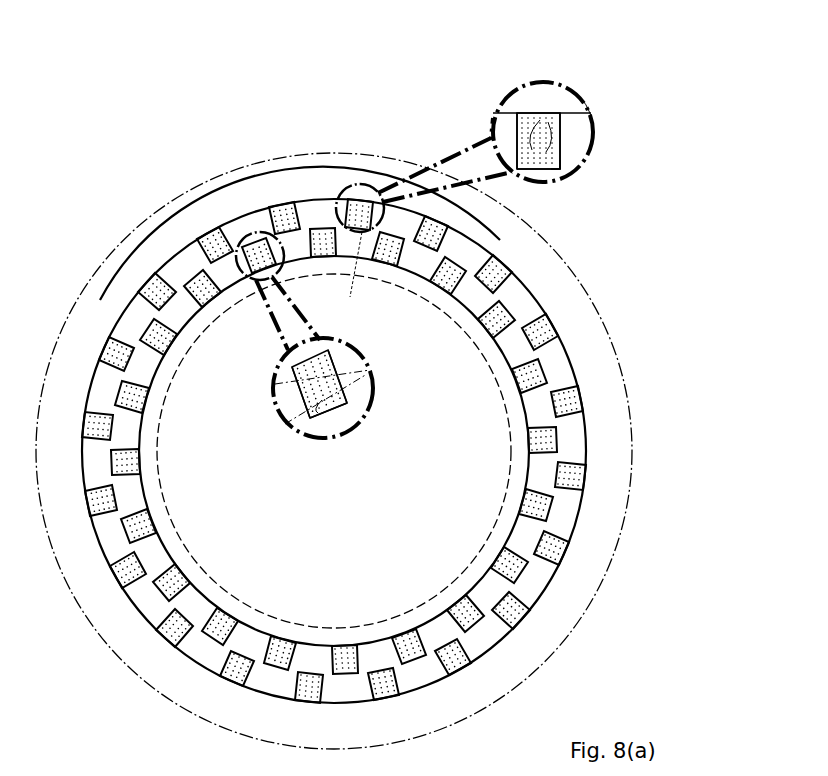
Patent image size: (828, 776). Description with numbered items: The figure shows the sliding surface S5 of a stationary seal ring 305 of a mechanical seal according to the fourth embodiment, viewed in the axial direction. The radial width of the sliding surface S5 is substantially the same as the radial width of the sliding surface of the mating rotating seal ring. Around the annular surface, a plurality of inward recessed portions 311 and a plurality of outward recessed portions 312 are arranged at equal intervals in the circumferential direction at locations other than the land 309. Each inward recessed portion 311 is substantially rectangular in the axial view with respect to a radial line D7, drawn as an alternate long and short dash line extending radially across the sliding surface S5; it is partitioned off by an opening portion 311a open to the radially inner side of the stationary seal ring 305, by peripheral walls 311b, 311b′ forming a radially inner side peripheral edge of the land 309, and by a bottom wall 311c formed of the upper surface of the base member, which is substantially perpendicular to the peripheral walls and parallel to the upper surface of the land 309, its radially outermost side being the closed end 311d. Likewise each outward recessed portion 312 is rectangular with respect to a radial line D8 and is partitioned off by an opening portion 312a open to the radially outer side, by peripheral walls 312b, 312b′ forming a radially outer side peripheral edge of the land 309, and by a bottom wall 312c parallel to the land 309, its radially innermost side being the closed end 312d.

The stationary seal ring 305 is at (190, 208).
The land 309 is at (177, 265).
The sliding surface S5 is at (280, 197).
The radial line D7 is at (251, 237).
The radial line D8 is at (361, 191).
The inward recessed portion 311 is at (262, 288).
The opening portion 311a is at (331, 418).
The peripheral wall 311b is at (345, 387).
The peripheral wall 311b′ is at (300, 420).
The bottom wall 311c is at (317, 413).
The closed end 311d is at (275, 384).
The outward recessed portion 312 is at (373, 190).
The opening portion 312a is at (547, 106).
The peripheral wall 312b is at (560, 130).
The peripheral wall 312b′ is at (515, 127).
The bottom wall 312c is at (590, 112).
The closed end 312d is at (565, 165).